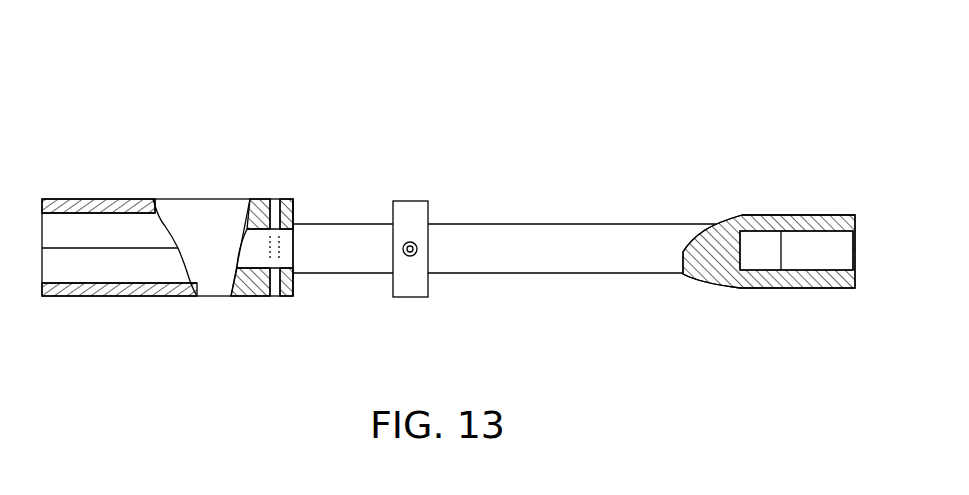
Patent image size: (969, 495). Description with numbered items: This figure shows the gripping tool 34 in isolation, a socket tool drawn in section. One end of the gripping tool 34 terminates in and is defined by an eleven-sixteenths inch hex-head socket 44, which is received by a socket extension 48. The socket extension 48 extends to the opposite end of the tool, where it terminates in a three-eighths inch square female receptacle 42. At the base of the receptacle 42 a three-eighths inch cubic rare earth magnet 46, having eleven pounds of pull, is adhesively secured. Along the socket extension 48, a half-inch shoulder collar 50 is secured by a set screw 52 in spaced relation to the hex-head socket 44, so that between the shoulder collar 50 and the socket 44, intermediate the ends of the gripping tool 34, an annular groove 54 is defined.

The gripping tool 34 is at (456, 95).
The square female receptacle 42 is at (769, 230).
The hex-head socket 44 is at (173, 192).
The cubic rare earth magnet 46 is at (760, 257).
The socket extension 48 is at (569, 235).
The shoulder collar 50 is at (420, 290).
The set screw 52 is at (417, 244).
The annular groove 54 is at (343, 190).